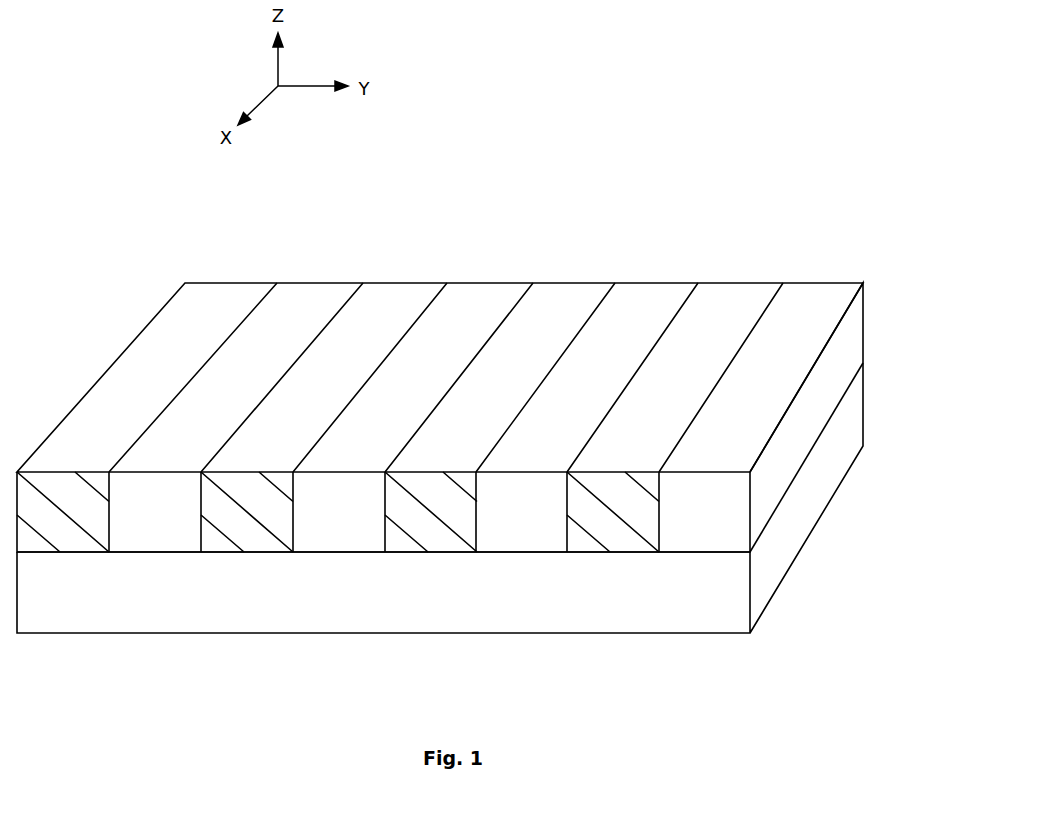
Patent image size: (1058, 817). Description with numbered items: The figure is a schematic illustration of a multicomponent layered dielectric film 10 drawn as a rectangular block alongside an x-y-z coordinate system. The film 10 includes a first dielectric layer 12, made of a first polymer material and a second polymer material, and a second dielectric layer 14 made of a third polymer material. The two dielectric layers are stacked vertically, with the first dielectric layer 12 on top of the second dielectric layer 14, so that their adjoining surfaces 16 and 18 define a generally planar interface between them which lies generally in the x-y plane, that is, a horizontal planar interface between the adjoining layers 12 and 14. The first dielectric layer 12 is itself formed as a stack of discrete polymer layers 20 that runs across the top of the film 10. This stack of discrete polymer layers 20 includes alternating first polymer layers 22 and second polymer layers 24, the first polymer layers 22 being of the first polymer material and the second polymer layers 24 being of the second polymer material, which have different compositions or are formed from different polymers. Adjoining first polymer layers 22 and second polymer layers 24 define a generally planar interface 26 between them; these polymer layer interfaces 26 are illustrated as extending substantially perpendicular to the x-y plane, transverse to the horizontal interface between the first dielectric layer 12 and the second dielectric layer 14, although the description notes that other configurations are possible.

The multicomponent layered dielectric film 10 is at (535, 153).
The first dielectric layer 12 is at (846, 357).
The second dielectric layer 14 is at (826, 477).
The adjoining surface 16 is at (786, 528).
The adjoining surface 18 is at (811, 427).
The stack of discrete polymer layers 20 is at (139, 335).
The first polymer layer 22 is at (192, 306).
The second polymer layer 24 is at (294, 306).
The polymer layer interface 26 is at (272, 287).